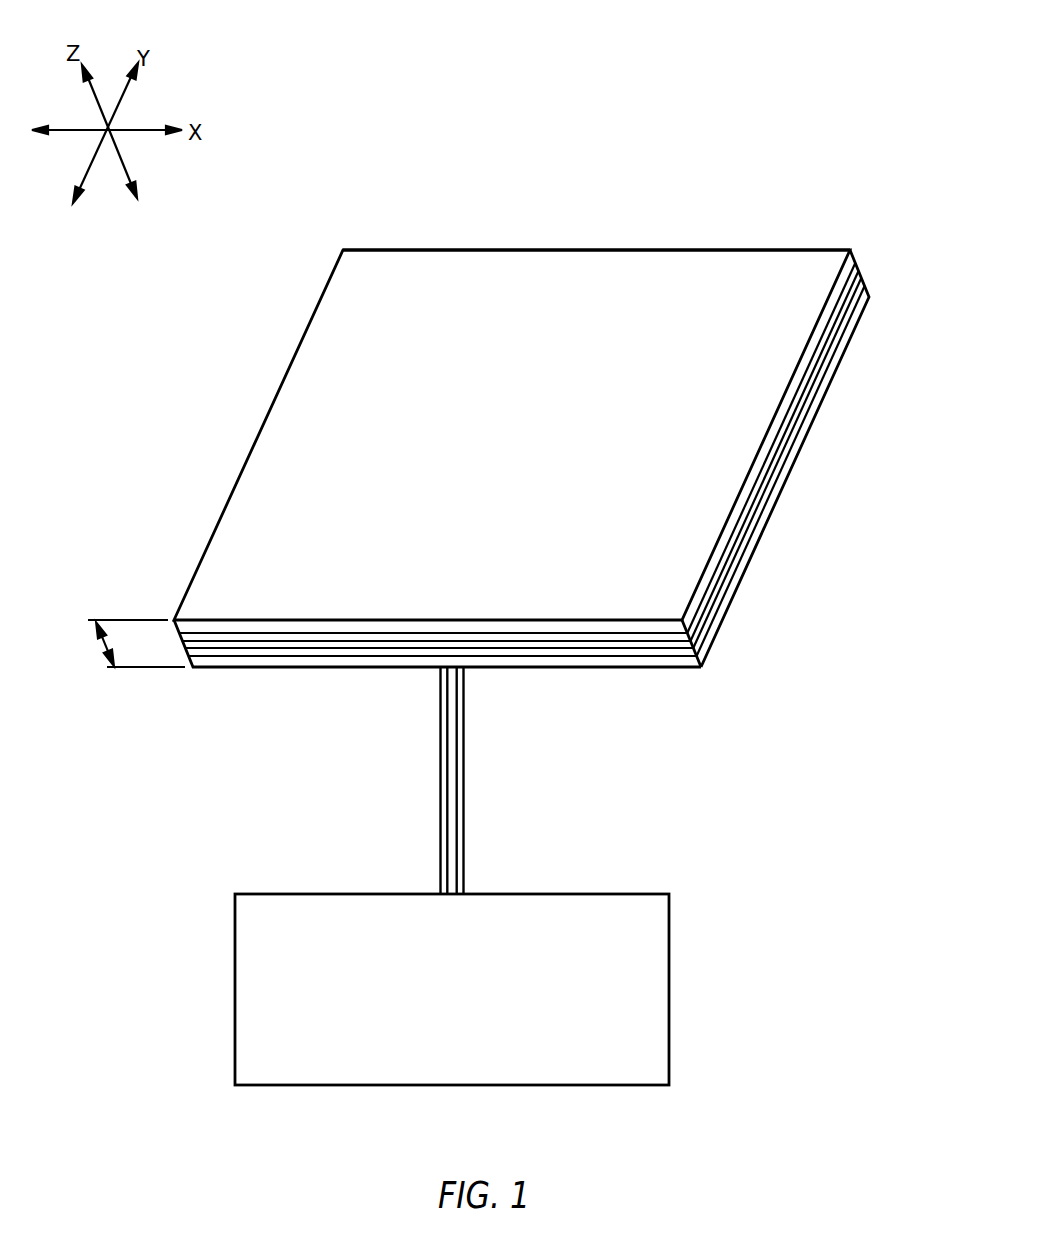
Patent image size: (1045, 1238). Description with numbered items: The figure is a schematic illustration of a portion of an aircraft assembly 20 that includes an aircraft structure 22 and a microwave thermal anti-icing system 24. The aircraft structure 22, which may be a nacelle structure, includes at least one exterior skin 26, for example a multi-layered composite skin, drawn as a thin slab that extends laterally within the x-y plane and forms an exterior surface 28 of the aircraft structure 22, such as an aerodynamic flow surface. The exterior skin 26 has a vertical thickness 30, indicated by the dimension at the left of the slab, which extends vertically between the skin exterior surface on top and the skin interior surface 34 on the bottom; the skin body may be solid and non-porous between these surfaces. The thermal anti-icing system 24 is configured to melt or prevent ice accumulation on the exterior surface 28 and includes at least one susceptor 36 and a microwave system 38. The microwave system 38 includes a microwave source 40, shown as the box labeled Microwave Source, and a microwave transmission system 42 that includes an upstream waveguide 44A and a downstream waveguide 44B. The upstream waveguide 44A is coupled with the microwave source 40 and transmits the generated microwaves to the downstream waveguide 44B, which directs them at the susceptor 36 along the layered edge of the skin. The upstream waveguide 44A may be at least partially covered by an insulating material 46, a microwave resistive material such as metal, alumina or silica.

The aircraft assembly 20 is at (800, 104).
The aircraft structure 22 is at (874, 212).
The microwave thermal anti-icing system 24 is at (792, 894).
The exterior skin 26 is at (684, 240).
The exterior surface 28 is at (433, 272).
The vertical thickness 30 is at (102, 650).
The skin interior surface 34 is at (285, 668).
The susceptor 36 is at (853, 262).
The microwave system 38 is at (664, 833).
The microwave source 40 is at (669, 982).
The microwave transmission system 42 is at (395, 798).
The upstream waveguide 44A is at (457, 768).
The downstream waveguide 44B is at (866, 283).
The insulating material 46 is at (440, 842).